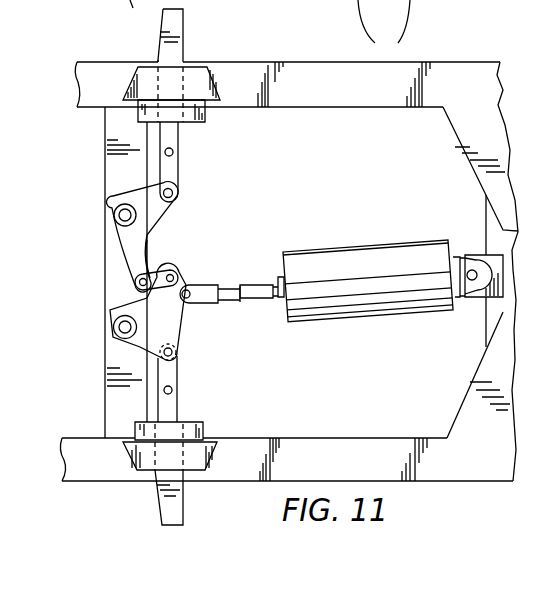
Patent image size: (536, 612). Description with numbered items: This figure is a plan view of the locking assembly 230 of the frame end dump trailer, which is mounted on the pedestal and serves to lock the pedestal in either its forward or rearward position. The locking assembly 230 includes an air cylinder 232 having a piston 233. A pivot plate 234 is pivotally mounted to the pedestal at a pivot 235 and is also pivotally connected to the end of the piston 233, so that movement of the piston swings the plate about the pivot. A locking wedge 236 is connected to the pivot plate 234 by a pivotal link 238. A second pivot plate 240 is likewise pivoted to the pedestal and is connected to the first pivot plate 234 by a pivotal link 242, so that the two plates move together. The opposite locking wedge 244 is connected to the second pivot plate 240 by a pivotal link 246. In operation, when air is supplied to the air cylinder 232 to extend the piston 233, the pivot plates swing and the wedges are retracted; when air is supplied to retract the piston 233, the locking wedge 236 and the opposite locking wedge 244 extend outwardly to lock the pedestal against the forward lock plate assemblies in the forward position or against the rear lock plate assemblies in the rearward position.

The locking assembly 230 is at (215, 237).
The air cylinder 232 is at (372, 256).
The piston 233 is at (263, 300).
The pivot plate 234 is at (180, 333).
The pivot 235 is at (112, 320).
The locking wedge 236 is at (180, 508).
The pivotal link 238 is at (177, 375).
The second pivot plate 240 is at (130, 197).
The pivotal link 242 is at (162, 258).
The opposite locking wedge 244 is at (180, 42).
The pivotal link 246 is at (180, 172).